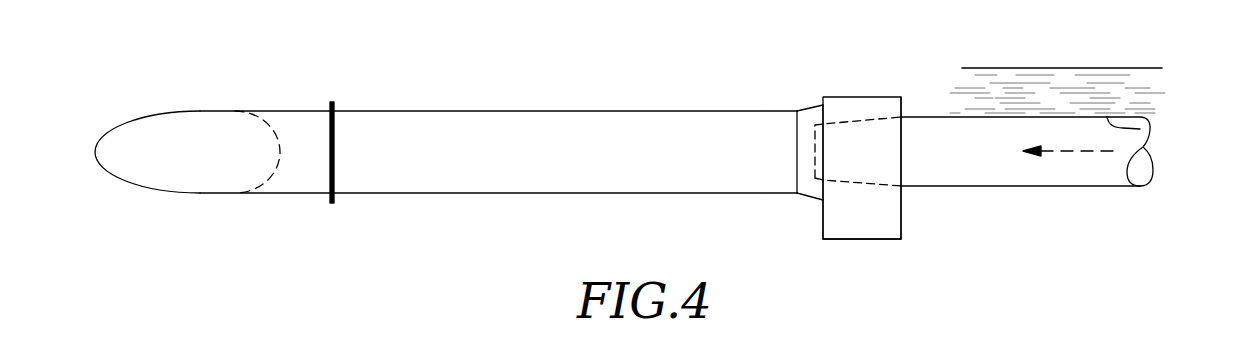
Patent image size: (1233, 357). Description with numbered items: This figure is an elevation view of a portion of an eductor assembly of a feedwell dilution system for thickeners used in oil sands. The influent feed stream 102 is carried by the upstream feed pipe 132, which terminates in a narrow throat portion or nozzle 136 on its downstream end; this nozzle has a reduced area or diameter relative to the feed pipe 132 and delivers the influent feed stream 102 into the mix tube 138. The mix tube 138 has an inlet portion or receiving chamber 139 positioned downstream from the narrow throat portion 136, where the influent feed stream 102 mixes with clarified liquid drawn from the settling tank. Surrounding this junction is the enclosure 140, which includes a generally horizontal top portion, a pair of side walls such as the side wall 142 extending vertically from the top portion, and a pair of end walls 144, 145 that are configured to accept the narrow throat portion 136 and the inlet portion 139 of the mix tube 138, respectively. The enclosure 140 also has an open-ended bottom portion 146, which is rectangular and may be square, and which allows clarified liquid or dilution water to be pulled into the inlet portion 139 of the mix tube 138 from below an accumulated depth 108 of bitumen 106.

The influent feed stream 102 is at (1085, 153).
The bitumen 106 is at (1103, 80).
The accumulated depth of bitumen 108 is at (1140, 129).
The feed pipe 132 is at (988, 186).
The narrow throat portion or nozzle 136 is at (758, 150).
The mix tube 138 is at (447, 88).
The inlet portion of the mix tube 139 is at (793, 70).
The enclosure 140 is at (882, 239).
The side wall 142 is at (863, 149).
The end wall 144 is at (800, 226).
The end wall 145 is at (901, 215).
The open-ended bottom portion 146 is at (843, 302).